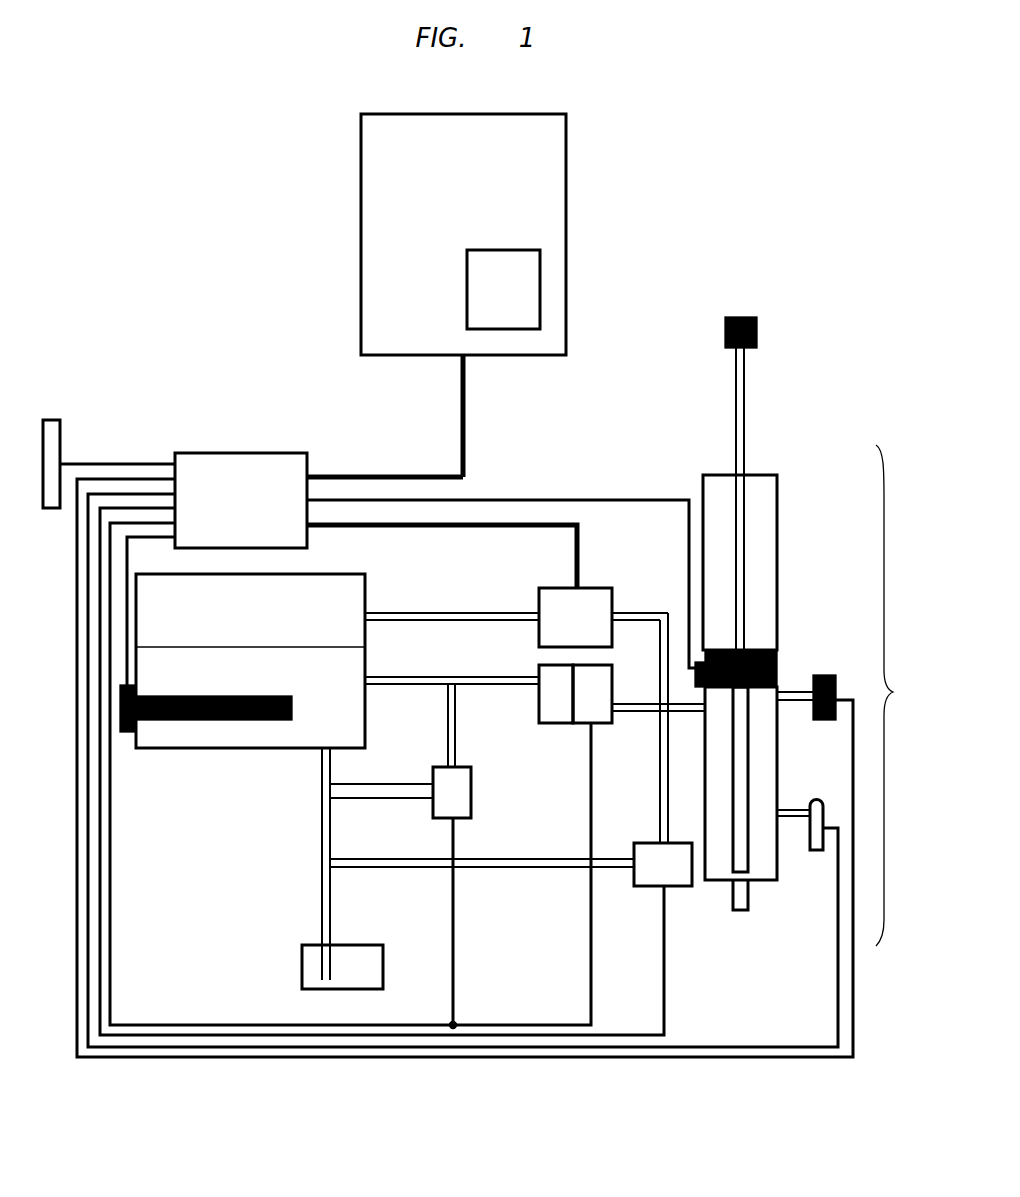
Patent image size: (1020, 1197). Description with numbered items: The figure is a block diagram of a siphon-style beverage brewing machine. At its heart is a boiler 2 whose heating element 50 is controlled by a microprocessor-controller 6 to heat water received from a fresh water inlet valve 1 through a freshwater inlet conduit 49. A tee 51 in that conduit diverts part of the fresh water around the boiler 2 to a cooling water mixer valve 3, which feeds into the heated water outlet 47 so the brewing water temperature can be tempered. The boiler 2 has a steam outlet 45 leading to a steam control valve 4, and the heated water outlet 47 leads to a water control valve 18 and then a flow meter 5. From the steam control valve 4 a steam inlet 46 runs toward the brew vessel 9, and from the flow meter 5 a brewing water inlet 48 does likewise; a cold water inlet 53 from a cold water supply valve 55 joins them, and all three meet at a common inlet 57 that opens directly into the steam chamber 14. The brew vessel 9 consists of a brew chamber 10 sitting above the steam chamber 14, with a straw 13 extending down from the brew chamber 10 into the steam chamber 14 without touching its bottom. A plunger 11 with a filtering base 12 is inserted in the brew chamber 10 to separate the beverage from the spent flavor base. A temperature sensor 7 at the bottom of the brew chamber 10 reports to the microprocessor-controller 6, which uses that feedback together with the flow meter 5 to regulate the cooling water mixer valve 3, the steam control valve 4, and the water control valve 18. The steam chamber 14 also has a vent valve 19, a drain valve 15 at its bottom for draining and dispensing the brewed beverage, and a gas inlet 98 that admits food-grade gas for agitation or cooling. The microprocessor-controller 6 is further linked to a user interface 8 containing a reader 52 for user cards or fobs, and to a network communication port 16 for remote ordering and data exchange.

The fresh water inlet valve 1 is at (342, 967).
The boiler 2 is at (250, 661).
The cooling water mixer valve 3 is at (452, 854).
The steam control valve 4 is at (575, 617).
The flow meter 5 is at (592, 694).
The microprocessor-controller 6 is at (465, 755).
The temperature sensor 7 is at (690, 676).
The user interface 8 is at (463, 295).
The brew vessel 9 is at (894, 695).
The brew chamber 10 is at (739, 562).
The plunger 11 is at (746, 412).
The filtering base 12 is at (777, 655).
The straw 13 is at (748, 776).
The steam chamber 14 is at (741, 783).
The drain valve 15 is at (740, 912).
The network communication port 16 is at (62, 430).
The water control valve 18 is at (555, 694).
The vent valve 19 is at (830, 676).
The steam outlet 45 is at (405, 612).
The steam inlet 46 is at (634, 608).
The heated water outlet 47 is at (405, 676).
The brewing water inlet 48 is at (630, 718).
The freshwater inlet conduit 49 is at (320, 862).
The heating element 50 is at (187, 722).
The tee 51 is at (320, 790).
The reader 52 is at (503, 289).
The cold water inlet 53 is at (660, 806).
The cold water supply valve 55 is at (663, 864).
The common inlet 57 is at (660, 700).
The gas inlet 98 is at (816, 852).